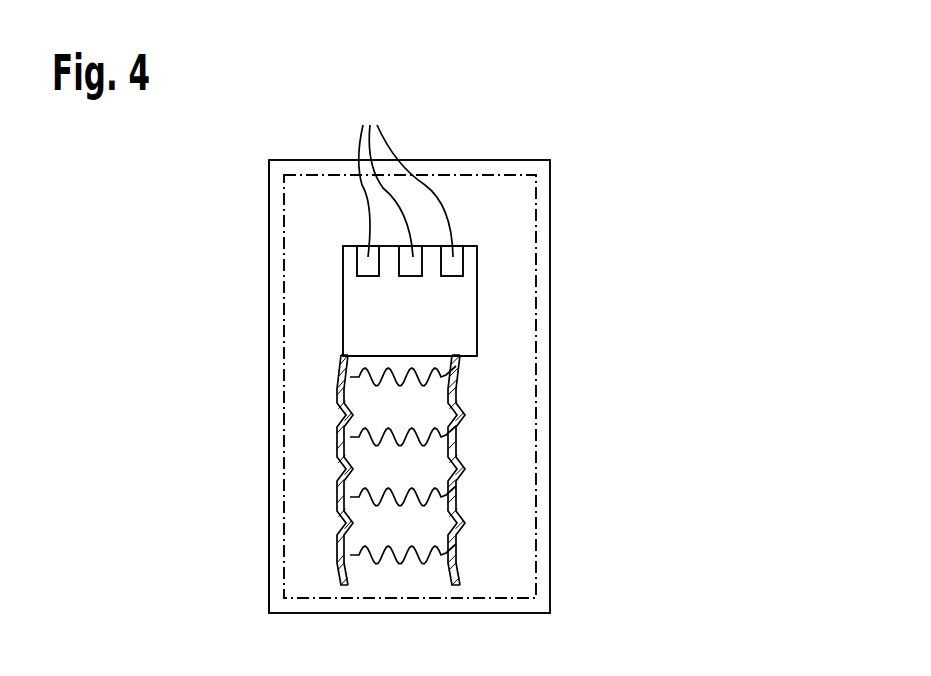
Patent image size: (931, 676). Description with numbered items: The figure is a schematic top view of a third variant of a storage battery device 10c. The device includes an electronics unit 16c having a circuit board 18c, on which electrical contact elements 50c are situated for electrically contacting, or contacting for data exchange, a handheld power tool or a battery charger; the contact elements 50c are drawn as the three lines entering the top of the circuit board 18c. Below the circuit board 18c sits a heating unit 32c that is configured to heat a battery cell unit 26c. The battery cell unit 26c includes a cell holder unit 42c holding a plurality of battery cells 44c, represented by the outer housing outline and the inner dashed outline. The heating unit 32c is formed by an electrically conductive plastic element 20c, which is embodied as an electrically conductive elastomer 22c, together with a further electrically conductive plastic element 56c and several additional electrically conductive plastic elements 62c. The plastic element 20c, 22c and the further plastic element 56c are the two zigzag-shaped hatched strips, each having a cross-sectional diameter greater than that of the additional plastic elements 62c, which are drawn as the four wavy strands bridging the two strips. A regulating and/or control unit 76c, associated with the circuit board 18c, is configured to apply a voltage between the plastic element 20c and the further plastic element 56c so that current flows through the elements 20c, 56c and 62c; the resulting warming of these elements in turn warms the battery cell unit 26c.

The storage battery device 10c is at (528, 142).
The electronics unit 16c is at (483, 220).
The circuit board 18c is at (462, 292).
The regulating and/or control unit 76c is at (462, 326).
The electrical contact elements 50c is at (401, 174).
The additional electrically conductive plastic elements 62c is at (447, 367).
The electrically conductive plastic element 20c is at (564, 470).
The electrically conductive elastomer 22c is at (456, 450).
The heating unit 32c is at (423, 466).
The further electrically conductive plastic element 56c is at (335, 461).
The cell holder unit 42c is at (268, 277).
The battery cells 44c is at (300, 232).
The battery cell unit 26c is at (242, 568).